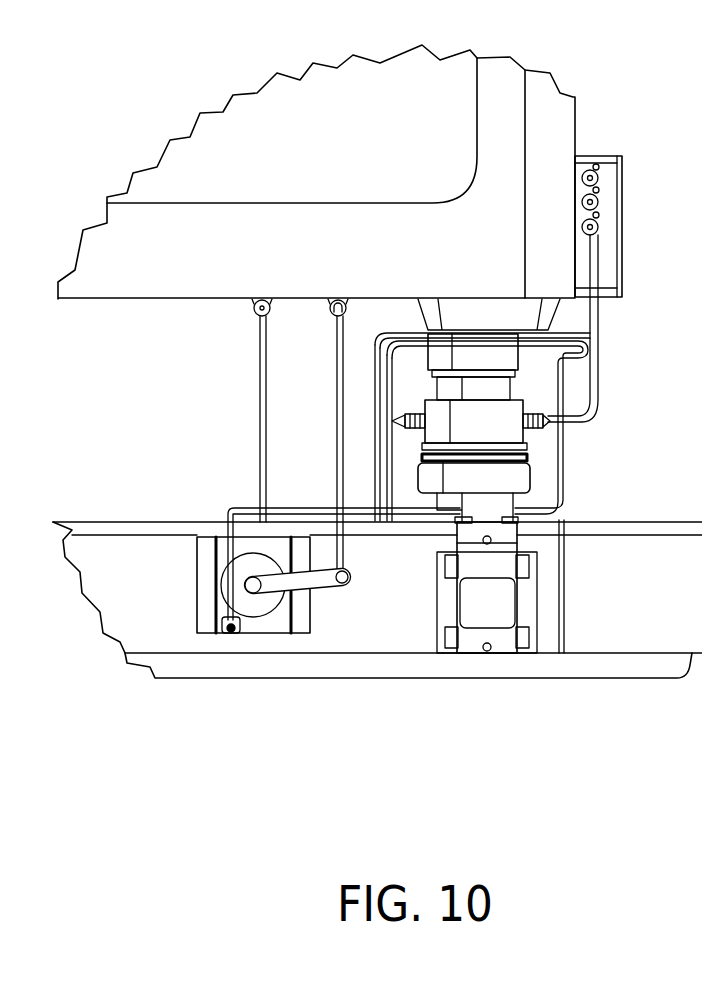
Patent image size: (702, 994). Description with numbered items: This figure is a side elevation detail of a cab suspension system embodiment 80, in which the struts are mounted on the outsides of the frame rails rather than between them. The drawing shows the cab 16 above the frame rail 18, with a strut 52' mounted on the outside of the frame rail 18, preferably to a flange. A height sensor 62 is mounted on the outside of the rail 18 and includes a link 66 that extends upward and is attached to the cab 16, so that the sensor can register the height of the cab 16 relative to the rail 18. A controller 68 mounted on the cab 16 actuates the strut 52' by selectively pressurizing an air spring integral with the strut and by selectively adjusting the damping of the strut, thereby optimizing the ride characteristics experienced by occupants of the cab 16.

The cab 16 is at (330, 264).
The frame rail 18 is at (143, 552).
The strut 52' is at (511, 428).
The height sensor 62 is at (270, 617).
The link 66 is at (348, 556).
The controller 68 is at (613, 264).
The suspension system embodiment 80 is at (421, 706).